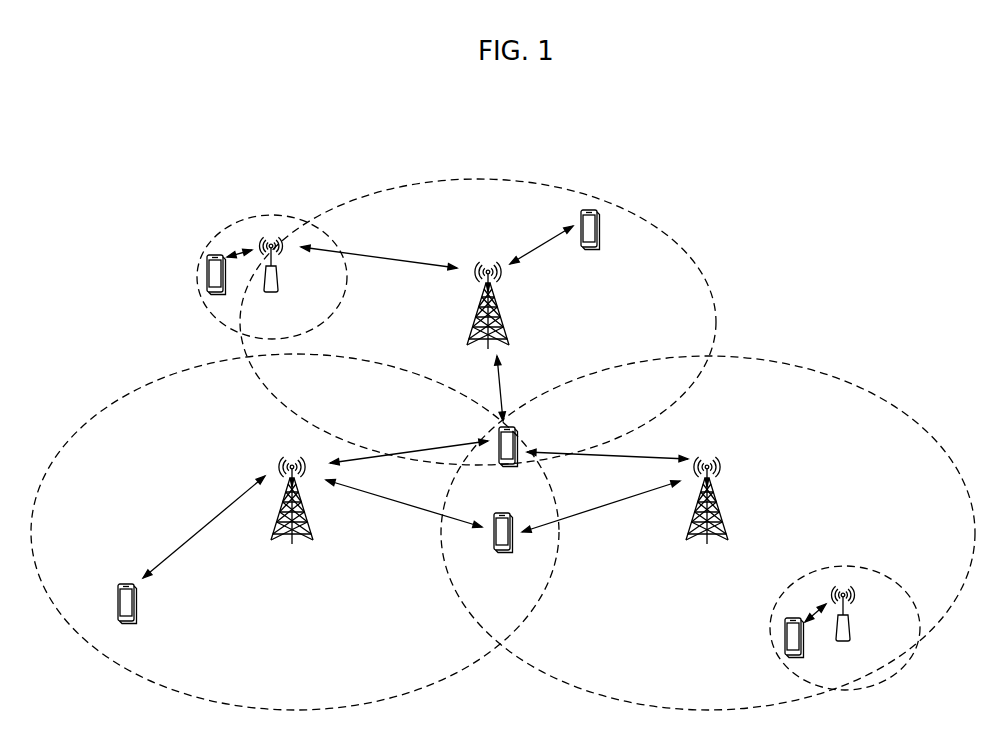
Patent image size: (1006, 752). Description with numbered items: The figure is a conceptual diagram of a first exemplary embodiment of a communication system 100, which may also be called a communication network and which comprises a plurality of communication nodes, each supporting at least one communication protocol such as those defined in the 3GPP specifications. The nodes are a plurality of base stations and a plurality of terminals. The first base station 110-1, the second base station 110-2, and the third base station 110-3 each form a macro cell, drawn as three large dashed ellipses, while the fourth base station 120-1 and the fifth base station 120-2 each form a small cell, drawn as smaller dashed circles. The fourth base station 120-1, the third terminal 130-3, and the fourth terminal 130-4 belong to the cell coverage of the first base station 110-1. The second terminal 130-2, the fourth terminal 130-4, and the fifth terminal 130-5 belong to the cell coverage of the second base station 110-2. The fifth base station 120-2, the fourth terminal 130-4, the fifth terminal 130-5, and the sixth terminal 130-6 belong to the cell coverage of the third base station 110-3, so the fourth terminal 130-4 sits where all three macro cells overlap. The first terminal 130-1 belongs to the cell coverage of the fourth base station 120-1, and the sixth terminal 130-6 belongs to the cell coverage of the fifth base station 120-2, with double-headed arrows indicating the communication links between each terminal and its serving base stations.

The communication system 100 is at (490, 154).
The first base station 110-1 is at (500, 318).
The second base station 110-2 is at (292, 545).
The third base station 110-3 is at (718, 512).
The fourth base station 120-1 is at (281, 280).
The fifth base station 120-2 is at (852, 632).
The first terminal 130-1 is at (207, 272).
The second terminal 130-2 is at (137, 602).
The third terminal 130-3 is at (598, 230).
The fourth terminal 130-4 is at (517, 432).
The fifth terminal 130-5 is at (503, 513).
The sixth terminal 130-6 is at (785, 640).